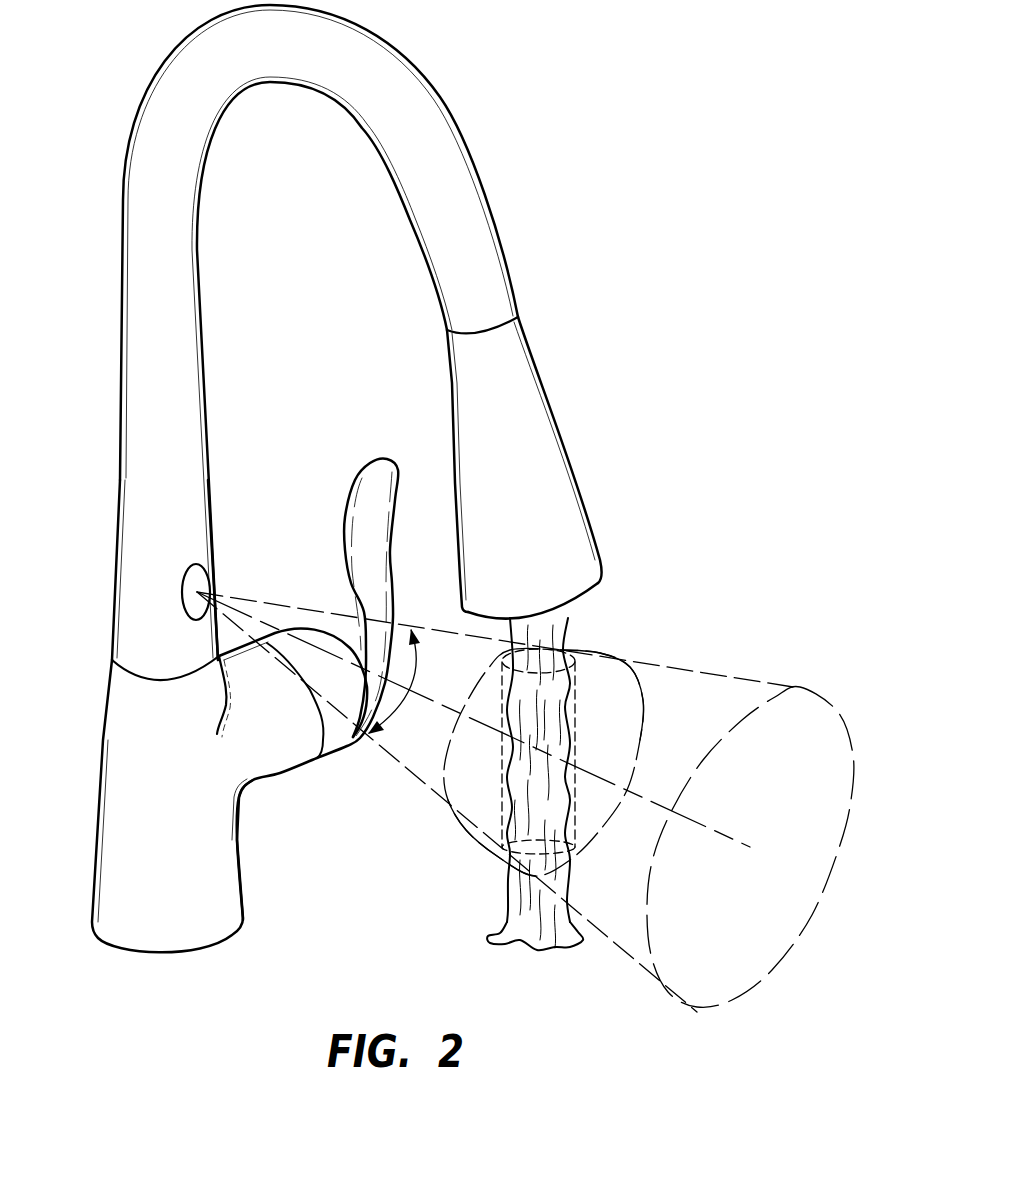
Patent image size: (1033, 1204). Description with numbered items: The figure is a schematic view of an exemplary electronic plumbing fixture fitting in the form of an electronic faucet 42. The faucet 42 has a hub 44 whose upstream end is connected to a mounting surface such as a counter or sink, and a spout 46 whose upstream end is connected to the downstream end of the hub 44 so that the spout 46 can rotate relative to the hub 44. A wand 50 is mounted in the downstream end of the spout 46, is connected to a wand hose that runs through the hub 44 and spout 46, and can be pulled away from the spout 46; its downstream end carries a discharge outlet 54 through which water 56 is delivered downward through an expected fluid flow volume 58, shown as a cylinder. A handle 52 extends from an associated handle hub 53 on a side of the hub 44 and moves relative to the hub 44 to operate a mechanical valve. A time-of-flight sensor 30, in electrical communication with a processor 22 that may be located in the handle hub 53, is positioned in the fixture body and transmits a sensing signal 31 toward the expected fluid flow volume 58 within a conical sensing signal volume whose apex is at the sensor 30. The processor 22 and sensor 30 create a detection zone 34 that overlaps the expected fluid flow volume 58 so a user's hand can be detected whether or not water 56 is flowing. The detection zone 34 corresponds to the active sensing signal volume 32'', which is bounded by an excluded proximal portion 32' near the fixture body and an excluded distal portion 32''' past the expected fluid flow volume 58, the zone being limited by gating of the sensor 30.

The processor 22 is at (137, 595).
The time-of-flight (TOF) sensor 30 is at (143, 560).
The sensing signal 31 is at (422, 760).
The excluded proximal portion of the sensing signal volume 32' is at (495, 619).
The active sensing signal volume 32'' is at (592, 748).
The excluded distal portion of the sensing signal volume 32''' is at (525, 812).
The detection zone 34 is at (647, 712).
The electronic faucet 42 is at (630, 85).
The hub 44 is at (108, 878).
The spout 46 is at (393, 97).
The wand 50 is at (545, 463).
The handle 52 is at (373, 481).
The handle hub 53 is at (272, 743).
The discharge outlet 54 is at (583, 608).
The water 56 is at (558, 888).
The expected fluid flow volume 58 is at (577, 710).